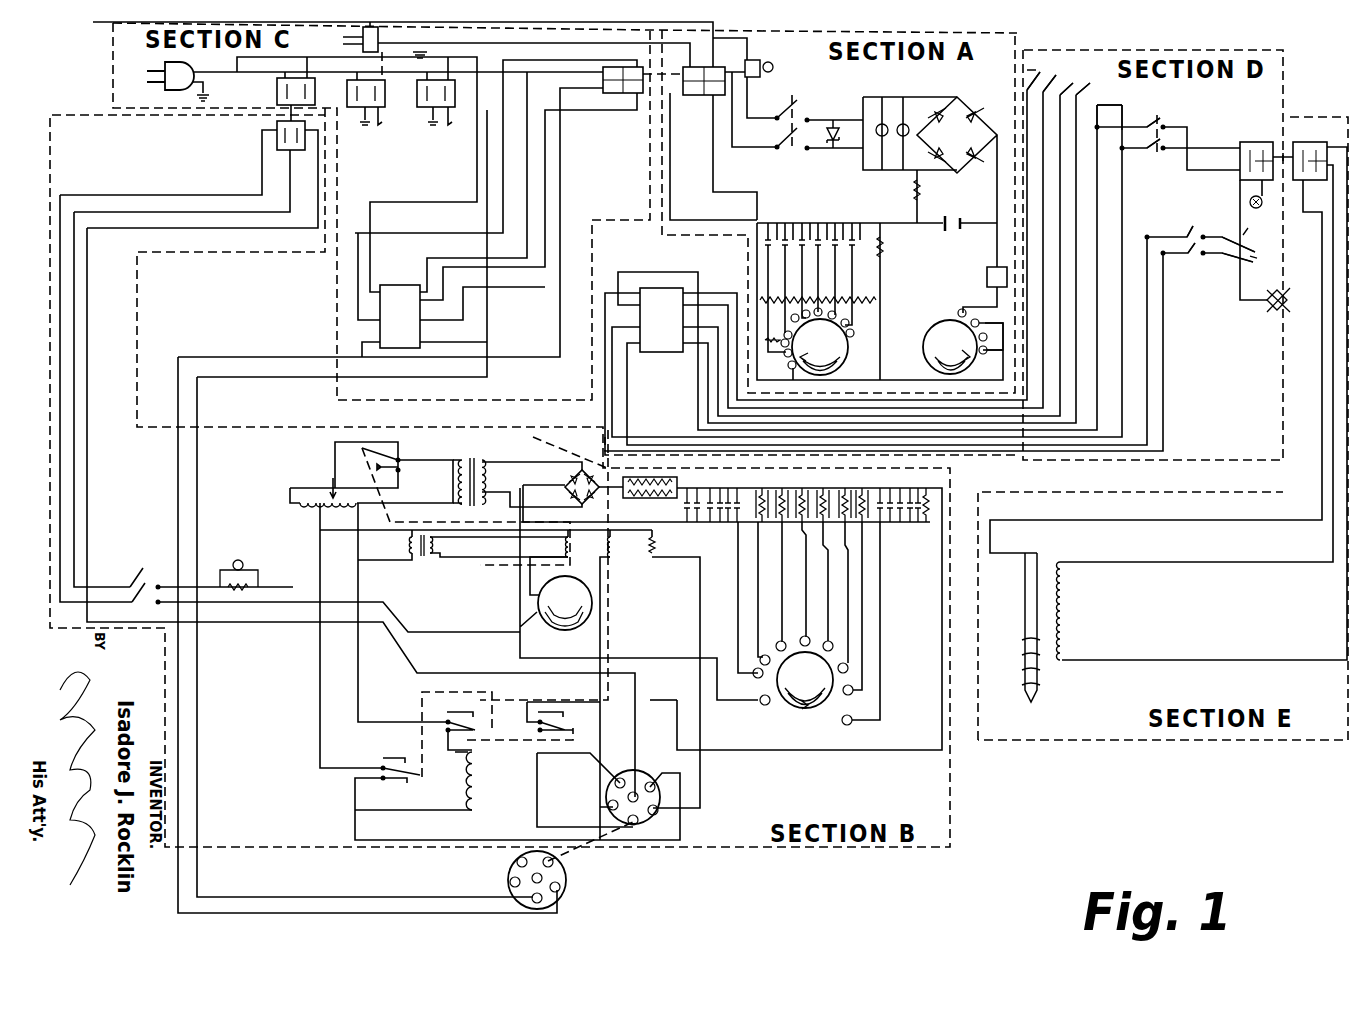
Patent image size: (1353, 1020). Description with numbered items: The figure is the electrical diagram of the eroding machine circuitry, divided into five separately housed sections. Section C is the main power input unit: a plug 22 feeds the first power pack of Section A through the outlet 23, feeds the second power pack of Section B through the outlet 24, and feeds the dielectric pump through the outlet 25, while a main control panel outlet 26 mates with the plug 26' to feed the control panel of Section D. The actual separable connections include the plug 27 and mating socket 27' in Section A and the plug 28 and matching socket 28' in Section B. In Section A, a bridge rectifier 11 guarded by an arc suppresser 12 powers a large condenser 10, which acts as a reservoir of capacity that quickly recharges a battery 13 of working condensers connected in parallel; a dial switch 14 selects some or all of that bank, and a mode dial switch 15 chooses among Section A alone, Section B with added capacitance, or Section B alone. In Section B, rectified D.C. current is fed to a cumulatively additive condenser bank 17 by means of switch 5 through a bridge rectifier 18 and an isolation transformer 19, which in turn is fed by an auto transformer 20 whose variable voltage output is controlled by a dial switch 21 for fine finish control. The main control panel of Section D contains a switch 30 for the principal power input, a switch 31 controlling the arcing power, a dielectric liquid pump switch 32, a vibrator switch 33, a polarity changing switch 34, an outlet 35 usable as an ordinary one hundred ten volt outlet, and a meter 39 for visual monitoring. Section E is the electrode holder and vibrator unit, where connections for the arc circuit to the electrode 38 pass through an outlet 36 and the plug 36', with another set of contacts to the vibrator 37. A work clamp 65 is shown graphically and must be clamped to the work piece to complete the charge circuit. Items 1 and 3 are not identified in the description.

The plug 22 is at (160, 64).
The outlet 24 is at (277, 91).
The outlet 23 is at (378, 125).
The outlet 25 is at (448, 125).
The plug 27 is at (620, 110).
The mating socket 27' is at (701, 110).
The main control panel outlet 26 is at (400, 294).
The plug 26' is at (661, 296).
The arc suppresser 12 is at (832, 118).
The bridge rectifier 11 is at (985, 160).
The battery of working condensers 13 is at (830, 222).
The condenser 10 is at (930, 232).
The dial switch 14 is at (838, 352).
The mode dial switch 15 is at (946, 332).
The switch 30 is at (1048, 82).
The dielectric liquid pump switch 32 is at (1080, 88).
The outlet 35 is at (1115, 100).
The vibrator switch 33 is at (1155, 157).
The outlet 36 is at (1256, 145).
The plug 36' is at (1318, 145).
The meter 39 is at (1250, 202).
The switch 31 is at (1185, 224).
The polarity changing switch 34 is at (1230, 265).
The work clamp 65 is at (1266, 307).
The isolation transformer 19 is at (495, 462).
The bridge rectifier 18 is at (585, 468).
The auto transformer 20 is at (290, 493).
The dial switch 21 is at (578, 601).
The condenser bank 17 is at (845, 525).
The switch 5 is at (805, 709).
The plug 28 is at (556, 885).
The matching socket 28' is at (646, 828).
The vibrator 37 is at (1066, 602).
The electrode 38 is at (1035, 695).
The fuse 3 is at (759, 68).
The plug 1 is at (385, 40).